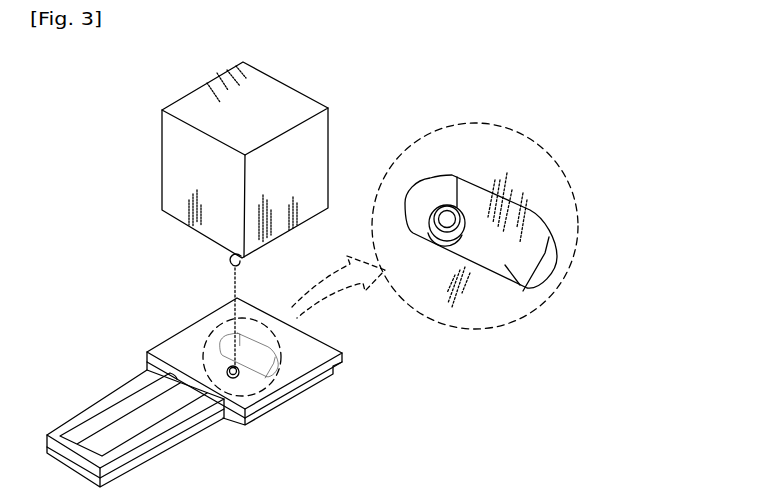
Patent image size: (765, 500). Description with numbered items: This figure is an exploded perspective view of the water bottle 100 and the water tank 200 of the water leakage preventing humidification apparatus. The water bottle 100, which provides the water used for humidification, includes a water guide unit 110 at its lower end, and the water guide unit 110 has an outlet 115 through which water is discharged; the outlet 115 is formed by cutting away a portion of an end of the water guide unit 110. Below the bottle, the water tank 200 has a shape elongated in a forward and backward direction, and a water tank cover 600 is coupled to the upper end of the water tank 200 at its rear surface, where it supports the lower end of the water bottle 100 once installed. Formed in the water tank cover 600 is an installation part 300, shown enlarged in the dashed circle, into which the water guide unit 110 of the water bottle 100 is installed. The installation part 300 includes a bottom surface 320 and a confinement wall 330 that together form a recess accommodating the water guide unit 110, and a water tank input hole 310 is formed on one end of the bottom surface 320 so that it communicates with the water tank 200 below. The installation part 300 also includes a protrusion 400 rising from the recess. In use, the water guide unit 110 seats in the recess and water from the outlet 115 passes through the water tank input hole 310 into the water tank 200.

The water bottle 100 is at (283, 93).
The water guide unit 110 is at (228, 256).
The outlet 115 is at (229, 265).
The water tank cover 600 is at (170, 341).
The water tank 200 is at (290, 405).
The installation part 300 is at (523, 217).
The confinement wall 330 is at (529, 198).
The water tank input hole 310 is at (553, 261).
The bottom surface 320 is at (520, 285).
The protrusion 400 is at (447, 217).